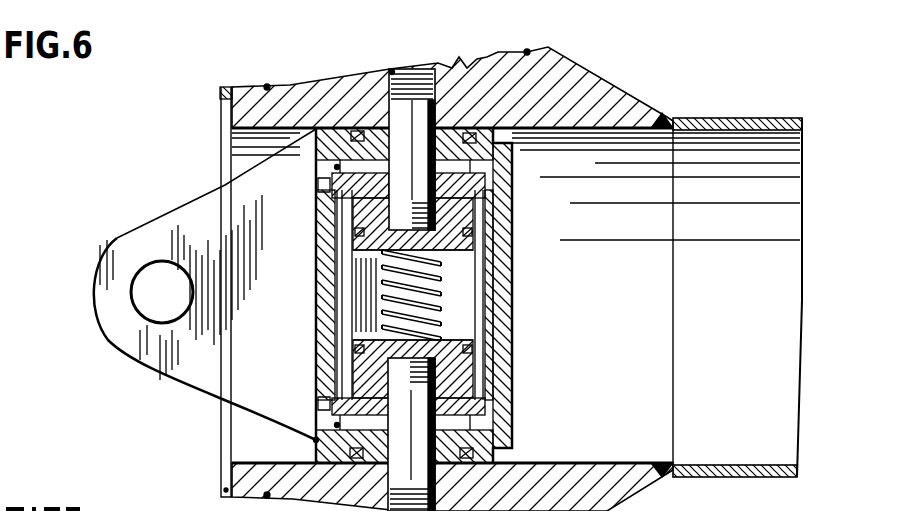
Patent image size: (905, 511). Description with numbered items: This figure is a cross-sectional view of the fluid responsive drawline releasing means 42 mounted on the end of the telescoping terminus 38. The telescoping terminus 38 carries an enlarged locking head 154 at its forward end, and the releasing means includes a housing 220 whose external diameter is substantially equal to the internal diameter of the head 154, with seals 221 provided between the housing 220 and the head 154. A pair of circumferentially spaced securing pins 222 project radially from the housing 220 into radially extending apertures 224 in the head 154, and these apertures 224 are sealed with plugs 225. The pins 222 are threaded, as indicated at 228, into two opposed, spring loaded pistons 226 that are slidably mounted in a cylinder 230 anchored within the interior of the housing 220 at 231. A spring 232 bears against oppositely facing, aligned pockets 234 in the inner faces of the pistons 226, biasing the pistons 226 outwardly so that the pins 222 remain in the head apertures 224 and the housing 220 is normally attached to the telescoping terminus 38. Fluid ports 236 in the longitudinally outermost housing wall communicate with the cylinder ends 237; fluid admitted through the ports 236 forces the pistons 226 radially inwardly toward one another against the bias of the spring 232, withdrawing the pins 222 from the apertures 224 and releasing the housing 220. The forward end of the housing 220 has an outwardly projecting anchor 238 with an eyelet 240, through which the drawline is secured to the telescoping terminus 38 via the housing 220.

The locking head 154 is at (608, 66).
The fluid responsive drawline releasing means 42 is at (255, 156).
The telescoping terminus 38 is at (700, 478).
The seals 221 is at (470, 467).
The housing 220 is at (517, 189).
The cylinder 230 is at (484, 293).
The cylinder ends 237 is at (513, 200).
The threaded connection 228 is at (505, 222).
The pistons 226 is at (470, 253).
The cylinder anchorage 231 is at (336, 166).
The fluid ports 236 is at (318, 185).
The pockets 234 is at (357, 258).
The spring 232 is at (379, 291).
The apertures 224 is at (433, 68).
The securing pins 222 is at (414, 142).
The plugs 225 is at (391, 71).
The anchor 238 is at (132, 242).
The eyelet 240 is at (138, 294).